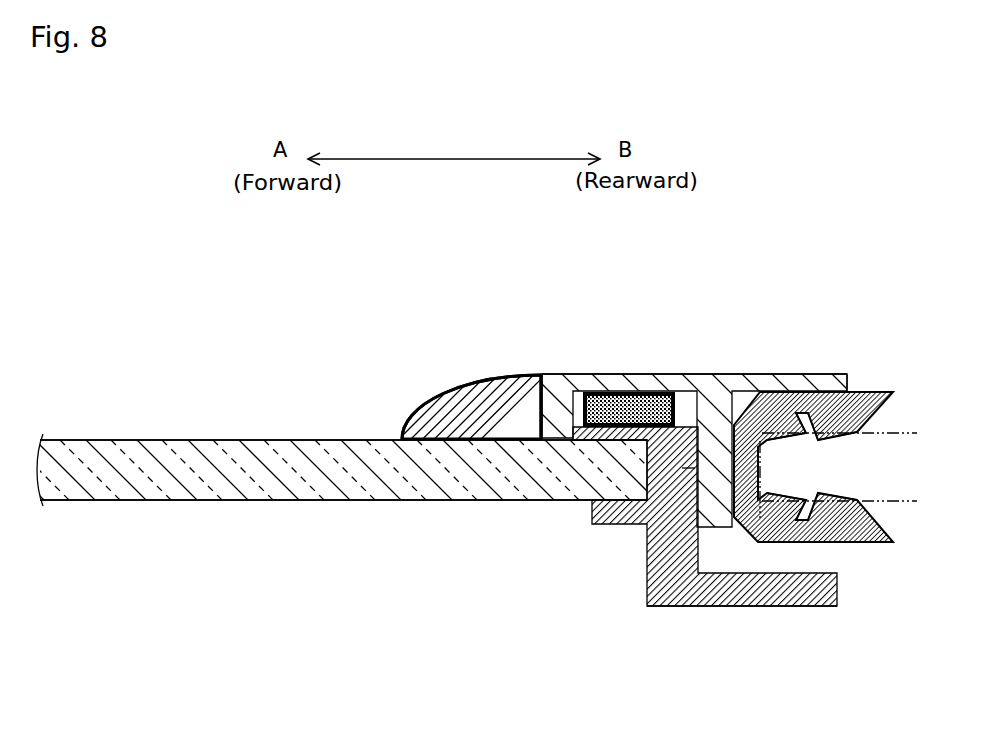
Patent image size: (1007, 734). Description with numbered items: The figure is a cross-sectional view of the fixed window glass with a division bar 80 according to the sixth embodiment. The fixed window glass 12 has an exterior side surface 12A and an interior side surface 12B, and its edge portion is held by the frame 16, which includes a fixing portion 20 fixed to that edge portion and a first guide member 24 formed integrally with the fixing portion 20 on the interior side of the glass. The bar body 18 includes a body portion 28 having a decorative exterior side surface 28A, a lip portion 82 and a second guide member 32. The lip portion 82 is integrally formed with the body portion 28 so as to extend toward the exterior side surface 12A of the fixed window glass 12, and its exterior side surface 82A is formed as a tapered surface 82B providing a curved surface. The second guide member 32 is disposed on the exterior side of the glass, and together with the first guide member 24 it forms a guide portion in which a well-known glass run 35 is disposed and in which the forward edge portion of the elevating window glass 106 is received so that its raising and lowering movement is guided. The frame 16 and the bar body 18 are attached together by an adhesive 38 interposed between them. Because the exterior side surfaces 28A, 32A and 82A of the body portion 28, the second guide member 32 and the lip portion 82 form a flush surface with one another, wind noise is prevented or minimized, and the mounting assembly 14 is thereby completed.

The fixed window glass 12 is at (186, 434).
The exterior side surface 12A is at (263, 440).
The interior side surface 12B is at (263, 502).
The mounting assembly 14 is at (742, 328).
The frame 16 is at (663, 612).
The bar body 18 is at (845, 373).
The fixing portion 20 is at (695, 468).
The first guide member 24 is at (742, 628).
The body portion 28 is at (688, 355).
The exterior side surface 28A is at (608, 374).
The second guide member 32 is at (825, 335).
The exterior side surface 32A is at (792, 374).
The glass run 35 is at (866, 410).
The adhesive 38 is at (655, 375).
The fixed window glass with a division bar 80 is at (693, 245).
The lip portion 82 is at (453, 422).
The exterior side surface 82A is at (520, 375).
The tapered surface 82B is at (435, 400).
The elevating window glass 106 is at (907, 502).